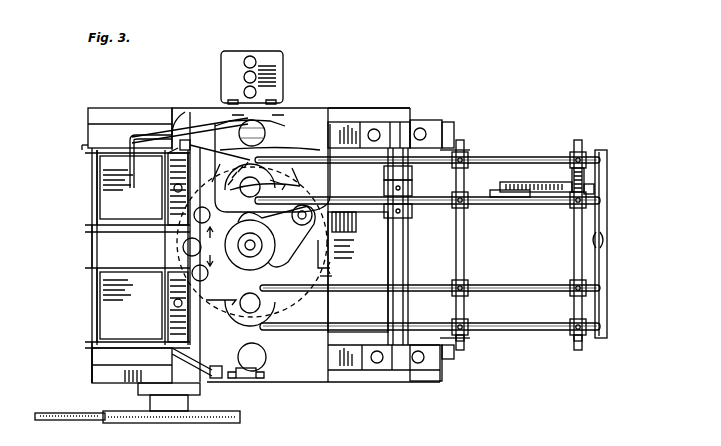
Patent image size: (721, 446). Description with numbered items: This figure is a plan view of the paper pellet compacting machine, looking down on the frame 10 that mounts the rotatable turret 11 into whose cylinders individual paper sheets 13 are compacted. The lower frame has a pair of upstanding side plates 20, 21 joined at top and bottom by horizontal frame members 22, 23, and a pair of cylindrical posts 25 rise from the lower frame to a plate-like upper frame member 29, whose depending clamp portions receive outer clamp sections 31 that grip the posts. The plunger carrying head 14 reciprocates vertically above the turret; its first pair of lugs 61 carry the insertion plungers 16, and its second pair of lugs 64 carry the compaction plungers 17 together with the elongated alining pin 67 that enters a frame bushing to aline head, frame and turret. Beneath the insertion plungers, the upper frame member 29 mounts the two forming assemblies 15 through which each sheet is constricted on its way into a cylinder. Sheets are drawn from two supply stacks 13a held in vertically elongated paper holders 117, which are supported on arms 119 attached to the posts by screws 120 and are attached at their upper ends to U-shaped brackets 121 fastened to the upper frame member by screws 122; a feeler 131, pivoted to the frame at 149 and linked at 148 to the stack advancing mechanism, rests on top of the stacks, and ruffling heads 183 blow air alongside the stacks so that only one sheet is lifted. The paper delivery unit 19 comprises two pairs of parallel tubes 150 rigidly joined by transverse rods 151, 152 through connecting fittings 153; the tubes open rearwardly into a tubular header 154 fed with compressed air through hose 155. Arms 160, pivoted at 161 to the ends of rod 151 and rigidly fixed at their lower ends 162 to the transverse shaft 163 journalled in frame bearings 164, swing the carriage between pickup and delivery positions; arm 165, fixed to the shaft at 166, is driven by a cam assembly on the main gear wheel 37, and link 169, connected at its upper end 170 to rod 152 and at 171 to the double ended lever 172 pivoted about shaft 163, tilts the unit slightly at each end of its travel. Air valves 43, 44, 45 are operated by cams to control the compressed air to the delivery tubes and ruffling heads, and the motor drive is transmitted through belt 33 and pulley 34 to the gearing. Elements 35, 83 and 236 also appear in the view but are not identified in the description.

The frame 10 is at (408, 106).
The turret 11 is at (332, 277).
The sheet of paper 13 is at (190, 138).
The supply stack 13a is at (100, 157).
The plunger carrying head 14 is at (212, 270).
The forming assembly 15 is at (215, 170).
The insertion plunger 16 is at (257, 196).
The compaction plunger 17 is at (298, 224).
The paper delivery unit 19 is at (508, 142).
The side plate 20 is at (356, 383).
The side plate 21 is at (340, 122).
The horizontal frame member 22 is at (316, 108).
The horizontal frame member 23 is at (112, 128).
The cylindrical post 25 is at (275, 130).
The horizontal plate-like frame member 29 is at (290, 132).
The outer clamp section 31 is at (263, 126).
The belt 33 is at (45, 420).
The pulley 34 is at (135, 424).
The support 35 is at (150, 372).
The main gear wheel 37 is at (352, 236).
The air valve 43 is at (244, 76).
The air valve 44 is at (256, 77).
The air valve 45 is at (250, 56).
The lug 61 is at (272, 184).
The lug 64 is at (338, 196).
The alining pin 67 is at (184, 246).
The bracket 83 is at (330, 252).
The paper holder 117 is at (98, 196).
The arm 119 is at (192, 358).
The screw 120 is at (246, 378).
The U-shaped bracket member 121 is at (92, 254).
The screw 122 is at (168, 206).
The feeler 131 is at (130, 178).
The pivotal connection 148 is at (182, 138).
The pivot mounting 149 is at (338, 148).
The tube 150 is at (536, 182).
The transverse rod 151 is at (468, 242).
The transverse rod 152 is at (578, 262).
The connecting fitting 153 is at (587, 158).
The transverse tubular header 154 is at (608, 212).
The hose 155 is at (606, 250).
The arm 160 is at (448, 150).
The pivotal connection 161 is at (468, 150).
The lower end of arm 162 is at (412, 176).
The transverse shaft 163 is at (408, 256).
The bearing 164 is at (422, 120).
The arm 165 is at (356, 232).
The rigid connection 166 is at (412, 214).
The link 169 is at (580, 168).
The upper end of link 170 is at (596, 190).
The pivotal connection 171 is at (510, 183).
The double ended lever 172 is at (512, 198).
The paper ruffling head 183 is at (172, 188).
The pedestal 236 is at (172, 395).